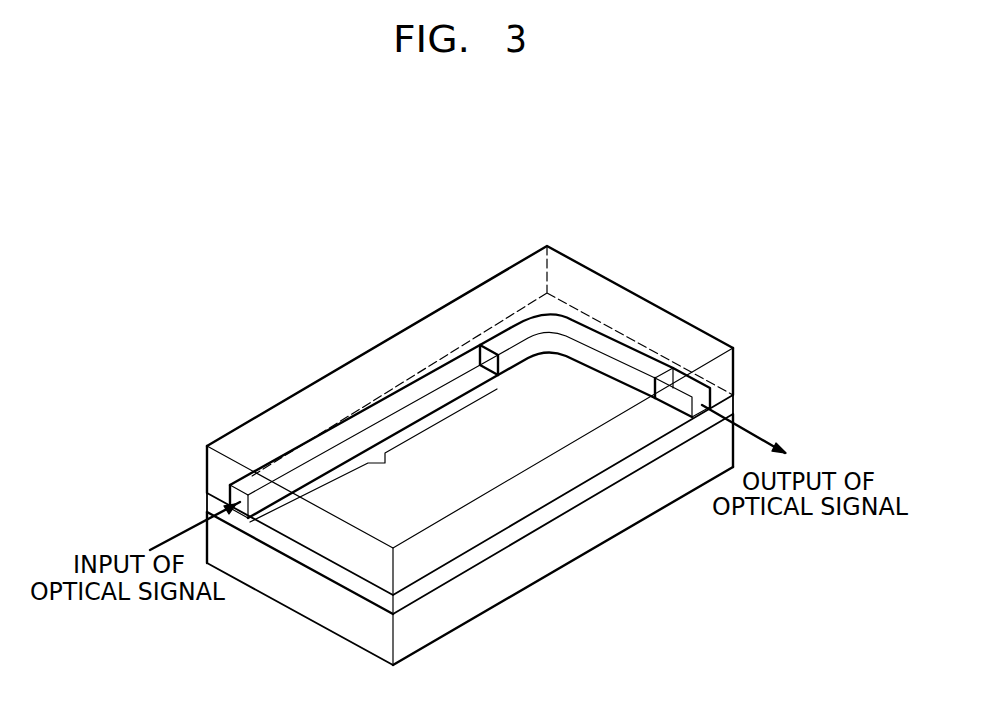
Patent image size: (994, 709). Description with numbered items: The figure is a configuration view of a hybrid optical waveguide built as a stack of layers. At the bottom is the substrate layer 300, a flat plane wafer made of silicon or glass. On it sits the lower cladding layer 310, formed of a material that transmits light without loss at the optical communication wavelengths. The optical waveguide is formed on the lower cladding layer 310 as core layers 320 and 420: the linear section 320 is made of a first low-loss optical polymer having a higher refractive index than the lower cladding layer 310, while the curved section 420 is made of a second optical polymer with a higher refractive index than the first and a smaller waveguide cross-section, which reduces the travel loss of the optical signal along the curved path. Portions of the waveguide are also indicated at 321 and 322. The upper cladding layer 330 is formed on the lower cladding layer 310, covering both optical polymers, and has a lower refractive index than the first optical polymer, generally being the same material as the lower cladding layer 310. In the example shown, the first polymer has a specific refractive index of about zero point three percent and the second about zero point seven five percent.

The substrate layer 300 is at (332, 619).
The lower cladding layer 310 is at (438, 578).
The linear section of the optical waveguide 320 is at (411, 390).
The straight waveguide section 321 is at (657, 400).
The curved waveguide section 322 is at (647, 398).
The upper cladding layer 330 is at (727, 372).
The curved section of the optical waveguide 420 is at (603, 345).